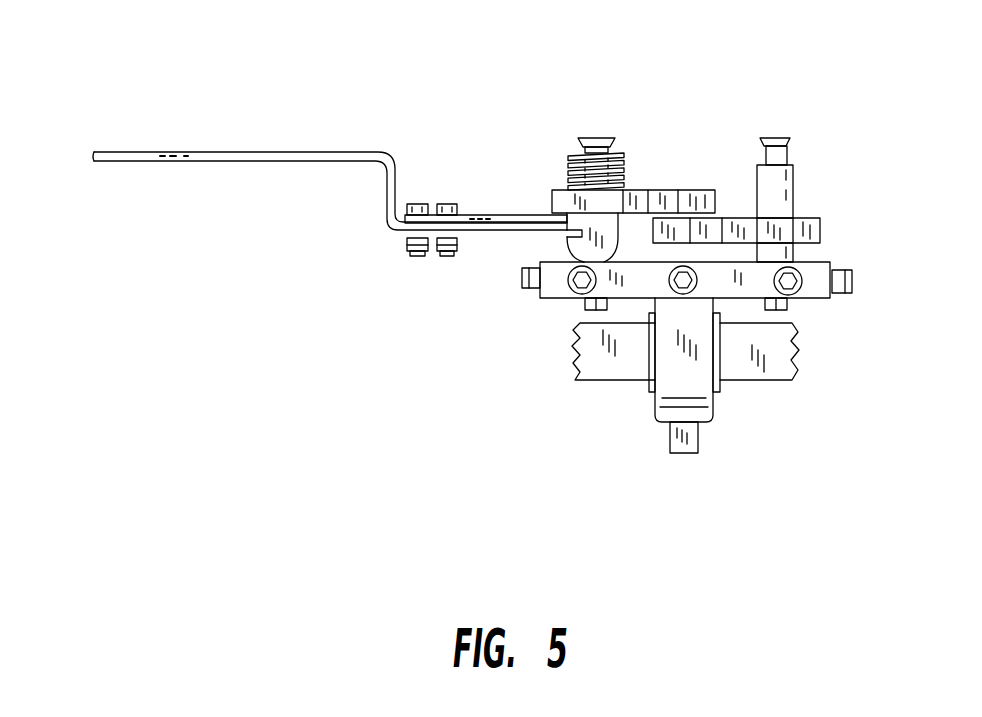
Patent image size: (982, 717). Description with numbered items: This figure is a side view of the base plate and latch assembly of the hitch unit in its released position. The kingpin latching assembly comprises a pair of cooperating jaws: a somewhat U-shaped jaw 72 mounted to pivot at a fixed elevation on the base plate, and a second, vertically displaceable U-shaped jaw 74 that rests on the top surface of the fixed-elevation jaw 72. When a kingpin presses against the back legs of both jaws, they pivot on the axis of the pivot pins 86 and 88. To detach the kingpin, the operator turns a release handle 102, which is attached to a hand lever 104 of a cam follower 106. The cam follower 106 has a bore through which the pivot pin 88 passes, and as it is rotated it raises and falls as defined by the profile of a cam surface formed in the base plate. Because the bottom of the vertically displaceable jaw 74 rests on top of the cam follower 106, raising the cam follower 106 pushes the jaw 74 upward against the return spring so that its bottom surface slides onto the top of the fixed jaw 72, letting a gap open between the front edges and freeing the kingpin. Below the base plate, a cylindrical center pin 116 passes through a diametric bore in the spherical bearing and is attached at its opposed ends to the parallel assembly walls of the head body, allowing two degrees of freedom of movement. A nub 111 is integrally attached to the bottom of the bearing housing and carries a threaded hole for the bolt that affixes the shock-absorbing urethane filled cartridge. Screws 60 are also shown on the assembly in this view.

The screws 60 is at (775, 139).
The U-shaped jaw 72 is at (750, 217).
The vertically displaceable U-shaped jaw 74 is at (640, 190).
The pivot pin 86 is at (792, 165).
The pivot pin 88 is at (585, 148).
The release handle 102 is at (197, 150).
The hand lever 104 is at (510, 215).
The cam follower 106 is at (587, 236).
The nub 111 is at (683, 440).
The cylindrical center pin 116 is at (597, 370).